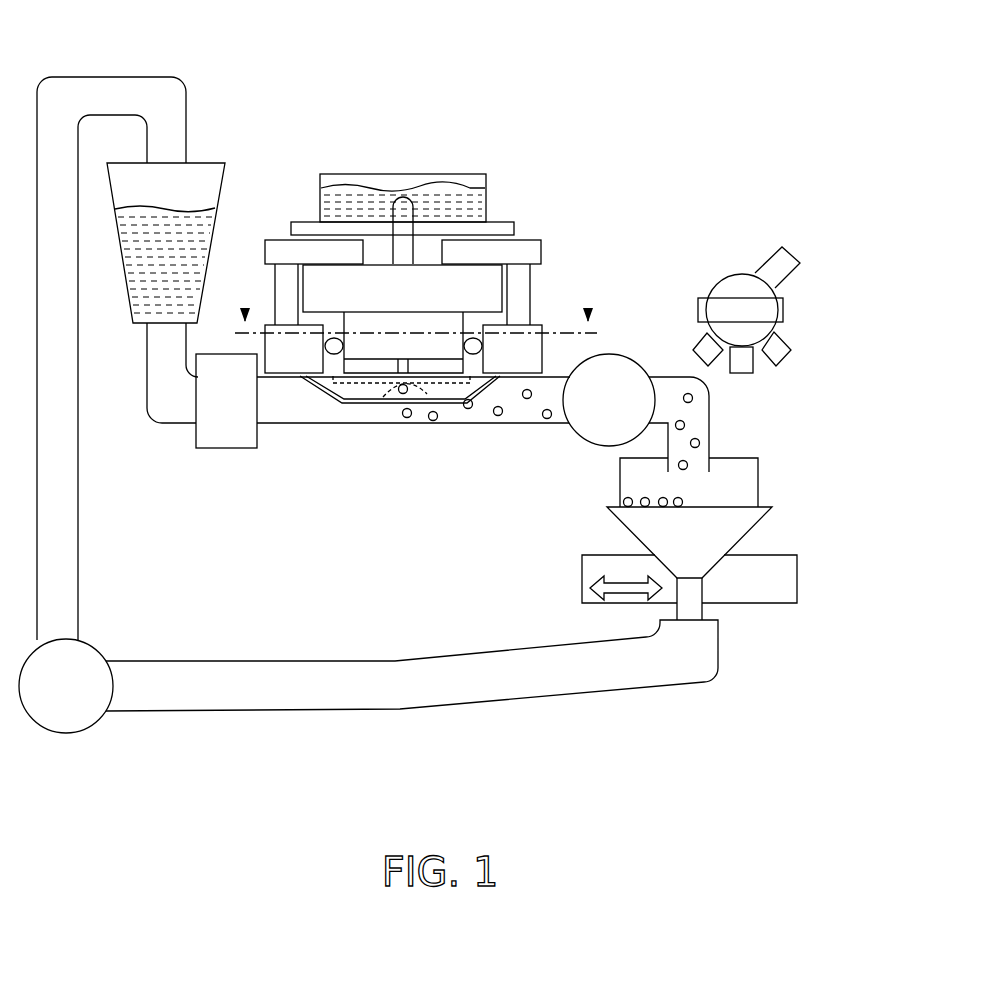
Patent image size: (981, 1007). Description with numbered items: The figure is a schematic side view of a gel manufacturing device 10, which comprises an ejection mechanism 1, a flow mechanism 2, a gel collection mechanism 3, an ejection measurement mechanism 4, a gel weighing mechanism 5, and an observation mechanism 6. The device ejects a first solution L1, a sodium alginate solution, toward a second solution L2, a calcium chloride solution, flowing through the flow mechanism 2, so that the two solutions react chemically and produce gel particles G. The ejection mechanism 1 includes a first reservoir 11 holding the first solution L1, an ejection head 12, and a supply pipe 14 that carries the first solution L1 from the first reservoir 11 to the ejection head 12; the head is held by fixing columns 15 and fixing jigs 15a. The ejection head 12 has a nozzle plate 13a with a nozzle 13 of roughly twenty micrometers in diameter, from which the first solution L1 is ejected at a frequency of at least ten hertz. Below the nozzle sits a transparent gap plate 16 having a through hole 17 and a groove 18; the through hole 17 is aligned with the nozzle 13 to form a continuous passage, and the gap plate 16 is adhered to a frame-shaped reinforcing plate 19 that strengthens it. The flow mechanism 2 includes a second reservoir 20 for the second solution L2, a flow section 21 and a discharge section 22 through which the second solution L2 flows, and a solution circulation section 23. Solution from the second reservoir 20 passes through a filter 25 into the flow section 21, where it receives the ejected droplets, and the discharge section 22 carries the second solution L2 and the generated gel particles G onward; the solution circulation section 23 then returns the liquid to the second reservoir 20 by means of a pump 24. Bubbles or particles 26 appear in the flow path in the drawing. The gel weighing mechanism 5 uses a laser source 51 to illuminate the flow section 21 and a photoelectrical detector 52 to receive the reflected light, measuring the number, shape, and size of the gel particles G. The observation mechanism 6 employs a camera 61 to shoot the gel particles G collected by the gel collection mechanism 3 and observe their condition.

The gel manufacturing device 10 is at (716, 71).
The ejection mechanism 1 is at (633, 242).
The flow mechanism 2 is at (291, 450).
The gel collection mechanism 3 is at (820, 505).
The ejection measurement mechanism 4 is at (543, 195).
The gel weighing mechanism 5 is at (645, 328).
The observation mechanism 6 is at (800, 231).
The first reservoir 11 is at (480, 174).
The ejection head 12 is at (343, 320).
The nozzle 13 is at (413, 365).
The nozzle plate 13a is at (355, 365).
The supply pipe 14 is at (401, 210).
The fixing columns 15 is at (521, 282).
The fixing jigs 15a is at (541, 249).
The gap plate 16 is at (362, 392).
The through hole 17 is at (421, 400).
The groove 18 is at (447, 380).
The reinforcing plate 19 is at (527, 340).
The second reservoir 20 is at (190, 210).
The flow section 21 is at (328, 412).
The discharge section 22 is at (700, 417).
The solution circulation section 23 is at (215, 704).
The pump 24 is at (65, 727).
The filter 25 is at (222, 441).
The bubbles 26 is at (480, 398).
The laser source 51 is at (628, 370).
The photoelectrical detector 52 is at (628, 387).
The camera 61 is at (777, 307).
The gel particles G is at (622, 500).
The first solution L1 is at (448, 192).
The second solution L2 is at (212, 216).